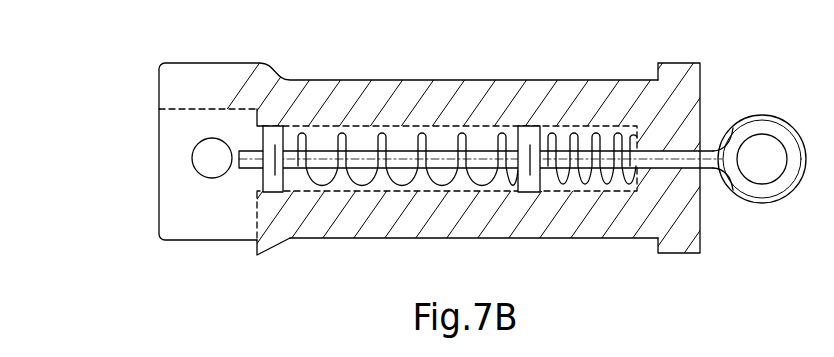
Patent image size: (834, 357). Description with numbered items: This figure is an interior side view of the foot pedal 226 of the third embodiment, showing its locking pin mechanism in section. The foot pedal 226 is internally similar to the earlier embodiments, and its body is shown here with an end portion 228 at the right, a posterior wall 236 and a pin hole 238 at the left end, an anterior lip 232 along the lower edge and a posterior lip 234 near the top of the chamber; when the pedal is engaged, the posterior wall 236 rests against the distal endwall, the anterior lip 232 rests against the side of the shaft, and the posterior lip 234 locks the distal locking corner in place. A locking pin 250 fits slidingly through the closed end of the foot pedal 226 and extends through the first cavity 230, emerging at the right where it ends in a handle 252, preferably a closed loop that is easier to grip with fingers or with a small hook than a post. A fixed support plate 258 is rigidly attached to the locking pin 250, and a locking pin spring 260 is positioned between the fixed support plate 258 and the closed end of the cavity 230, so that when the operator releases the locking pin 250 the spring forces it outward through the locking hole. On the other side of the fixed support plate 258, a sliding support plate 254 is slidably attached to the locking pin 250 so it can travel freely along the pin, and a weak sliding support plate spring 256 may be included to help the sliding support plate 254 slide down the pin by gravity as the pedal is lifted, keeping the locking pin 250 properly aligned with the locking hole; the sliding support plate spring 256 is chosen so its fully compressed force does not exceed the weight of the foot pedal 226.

The foot pedal 226 is at (570, 80).
The end flange 228 is at (677, 62).
The first cavity 230 is at (363, 140).
The anterior lip 232 is at (255, 222).
The posterior lip 234 is at (252, 118).
The posterior wall 236 is at (172, 110).
The pin hole 238 is at (202, 160).
The locking pin 250 is at (398, 165).
The handle 252 is at (798, 135).
The sliding support plate 254 is at (273, 127).
The sliding support plate spring 256 is at (327, 186).
The fixed support plate 258 is at (535, 193).
The locking pin spring 260 is at (597, 187).